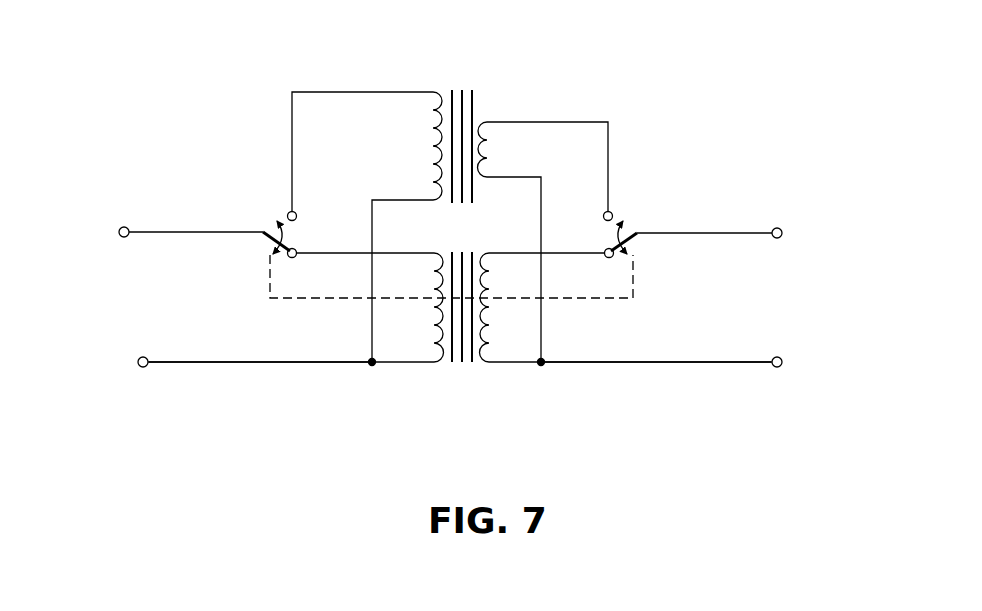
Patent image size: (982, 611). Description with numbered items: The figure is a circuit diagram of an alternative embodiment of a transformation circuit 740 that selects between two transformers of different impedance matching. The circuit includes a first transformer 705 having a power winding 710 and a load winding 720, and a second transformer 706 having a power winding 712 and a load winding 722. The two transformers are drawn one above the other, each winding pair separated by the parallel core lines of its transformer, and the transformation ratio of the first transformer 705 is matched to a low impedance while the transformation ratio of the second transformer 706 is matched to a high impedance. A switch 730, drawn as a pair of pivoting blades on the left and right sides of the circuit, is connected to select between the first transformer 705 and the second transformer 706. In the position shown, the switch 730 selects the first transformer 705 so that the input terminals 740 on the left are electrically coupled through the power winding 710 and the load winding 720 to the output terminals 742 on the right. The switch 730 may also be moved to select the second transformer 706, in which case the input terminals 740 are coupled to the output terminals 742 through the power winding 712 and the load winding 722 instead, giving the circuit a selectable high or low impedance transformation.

The first transformer 705 is at (464, 78).
The second transformer 706 is at (463, 372).
The power winding 710 is at (433, 136).
The power winding 712 is at (430, 332).
The load winding 720 is at (492, 145).
The load winding 722 is at (495, 332).
The switch 730 is at (267, 231).
The input terminals 740 is at (122, 226).
The output terminals 742 is at (779, 227).